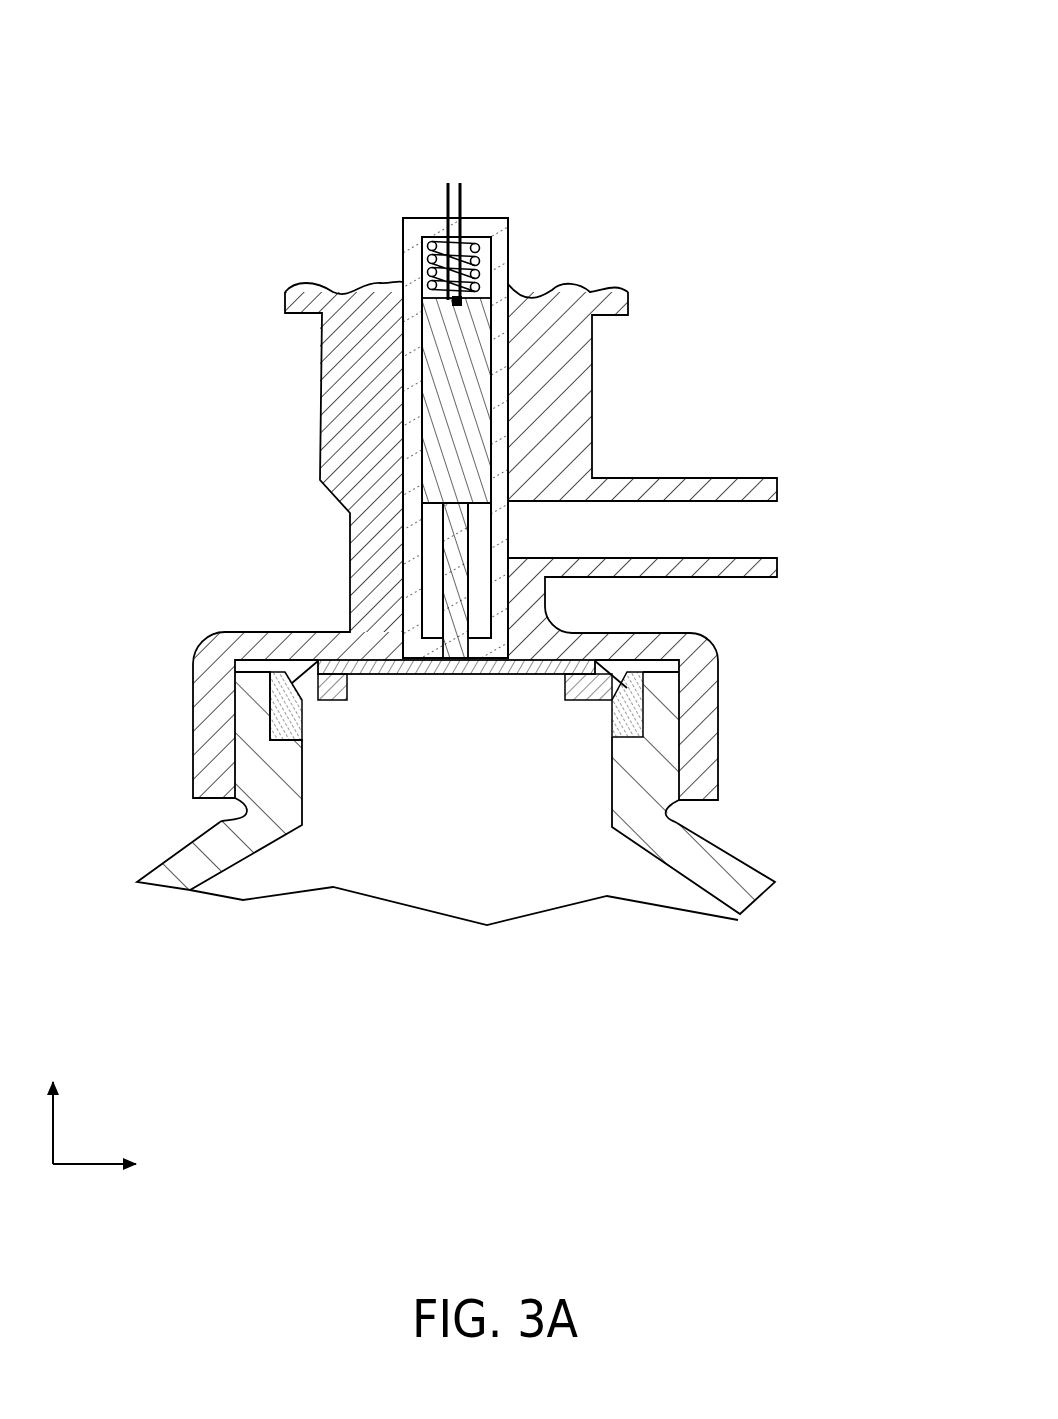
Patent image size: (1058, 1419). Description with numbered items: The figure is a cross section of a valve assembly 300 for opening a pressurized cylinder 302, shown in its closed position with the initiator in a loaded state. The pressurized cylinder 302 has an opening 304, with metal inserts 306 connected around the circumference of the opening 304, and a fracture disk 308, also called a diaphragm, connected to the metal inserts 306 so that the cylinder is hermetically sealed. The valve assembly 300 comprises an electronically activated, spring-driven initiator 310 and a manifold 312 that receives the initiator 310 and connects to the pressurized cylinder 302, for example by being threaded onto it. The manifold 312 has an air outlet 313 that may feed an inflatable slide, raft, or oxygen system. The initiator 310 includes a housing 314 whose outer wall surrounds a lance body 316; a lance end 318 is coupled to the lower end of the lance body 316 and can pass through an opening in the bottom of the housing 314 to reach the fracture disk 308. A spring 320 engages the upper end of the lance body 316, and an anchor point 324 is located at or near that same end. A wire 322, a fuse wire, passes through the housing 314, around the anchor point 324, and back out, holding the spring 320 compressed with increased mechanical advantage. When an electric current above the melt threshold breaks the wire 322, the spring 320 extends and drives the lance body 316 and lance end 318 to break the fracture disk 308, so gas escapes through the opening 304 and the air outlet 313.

The valve assembly 300 is at (117, 102).
The pressurized cylinder 302 is at (748, 865).
The opening 304 is at (488, 882).
The metal inserts 306 is at (297, 718).
The fracture disk 308 is at (520, 673).
The initiator 310 is at (560, 182).
The manifold 312 is at (162, 545).
The air outlet 313 is at (790, 534).
The housing 314 is at (412, 262).
The lance body 316 is at (443, 392).
The lance end 318 is at (458, 543).
The spring 320 is at (470, 240).
The wire 322 is at (448, 192).
The anchor point 324 is at (462, 300).